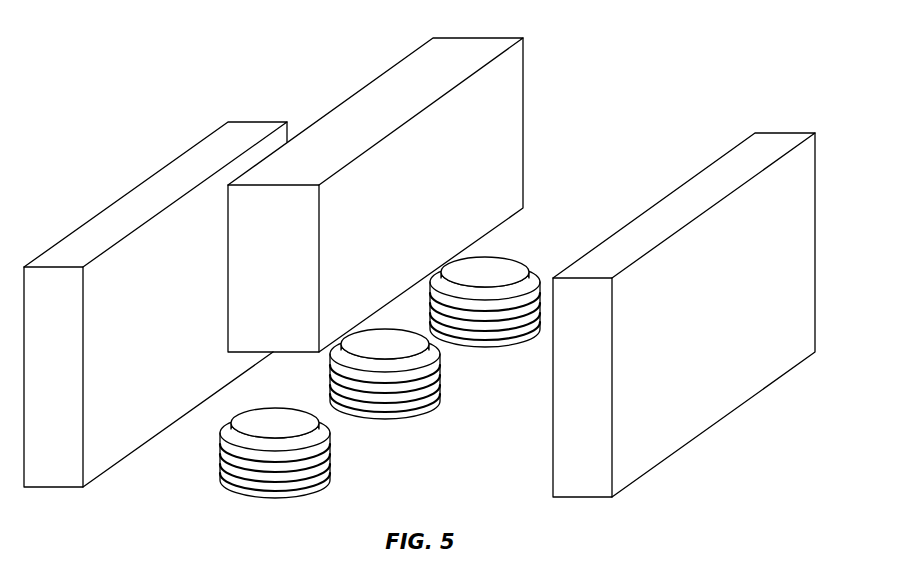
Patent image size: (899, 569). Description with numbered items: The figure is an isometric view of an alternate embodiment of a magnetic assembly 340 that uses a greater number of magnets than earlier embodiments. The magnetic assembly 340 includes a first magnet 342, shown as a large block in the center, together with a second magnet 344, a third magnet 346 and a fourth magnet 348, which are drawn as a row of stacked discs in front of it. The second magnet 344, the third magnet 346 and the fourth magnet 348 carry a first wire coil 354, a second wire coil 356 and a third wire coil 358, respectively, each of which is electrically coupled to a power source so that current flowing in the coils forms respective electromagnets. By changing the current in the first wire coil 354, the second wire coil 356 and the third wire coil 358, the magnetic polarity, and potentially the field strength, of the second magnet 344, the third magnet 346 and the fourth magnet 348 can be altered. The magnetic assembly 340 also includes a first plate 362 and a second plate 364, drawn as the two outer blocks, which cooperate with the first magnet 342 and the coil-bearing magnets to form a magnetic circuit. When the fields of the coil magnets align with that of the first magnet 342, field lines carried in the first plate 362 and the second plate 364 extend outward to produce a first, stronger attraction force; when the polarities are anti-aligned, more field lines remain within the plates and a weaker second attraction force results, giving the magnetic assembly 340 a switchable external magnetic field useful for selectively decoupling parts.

The magnetic assembly 340 is at (93, 100).
The first magnet 342 is at (525, 132).
The second magnet 344 is at (259, 432).
The third magnet 346 is at (369, 353).
The fourth magnet 348 is at (469, 281).
The first wire coil 354 is at (343, 468).
The second wire coil 356 is at (450, 411).
The third wire coil 358 is at (533, 357).
The first plate 362 is at (127, 458).
The second plate 364 is at (693, 442).